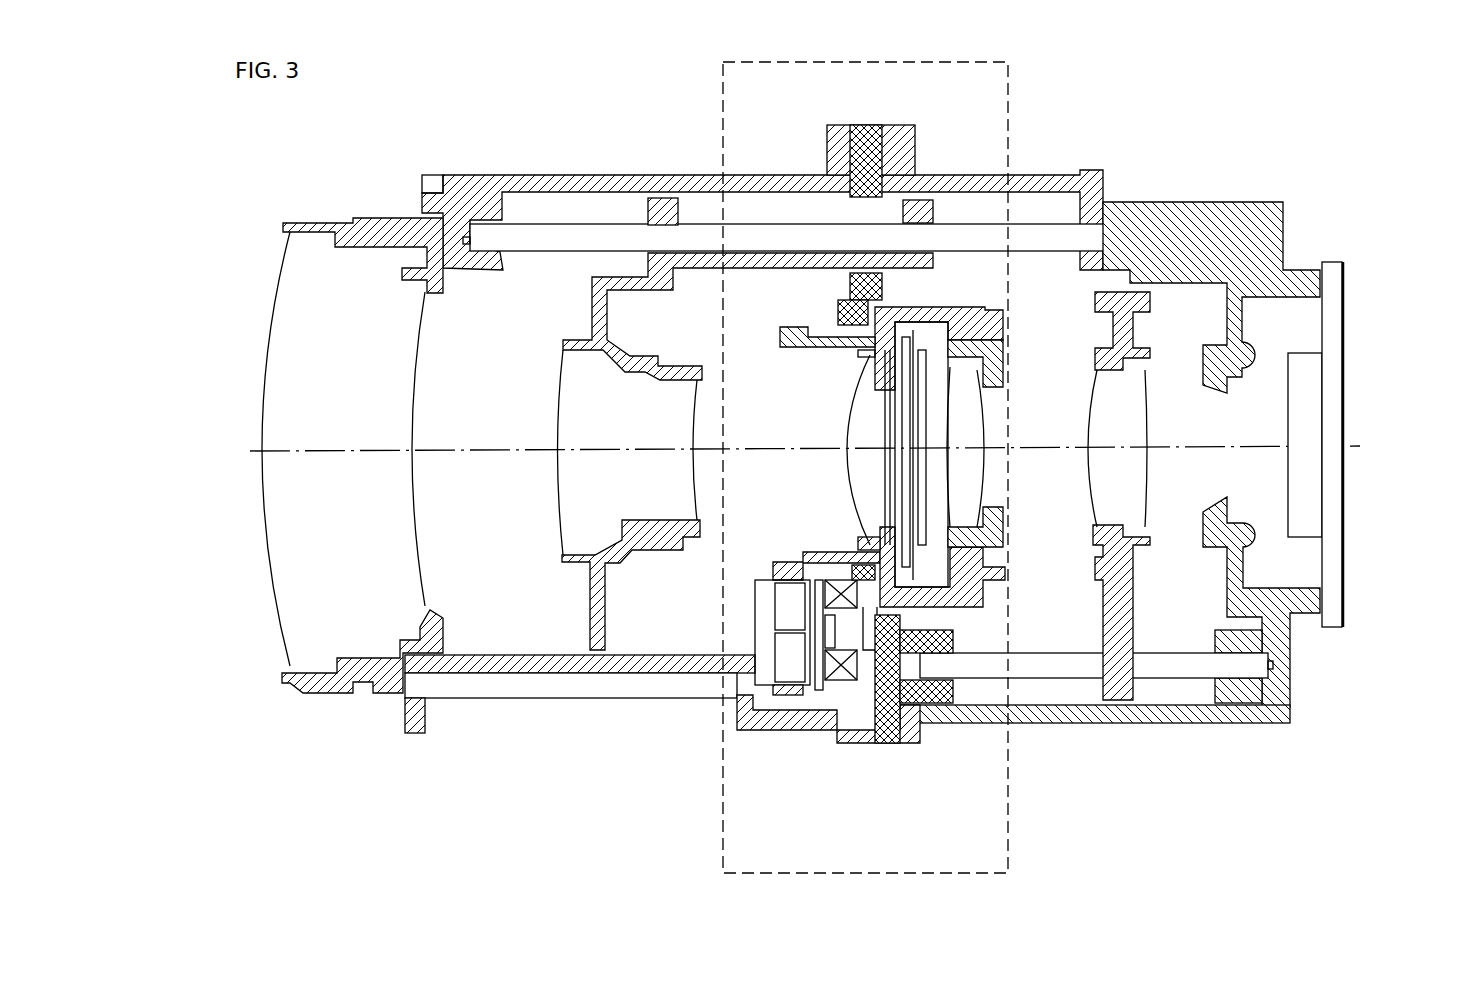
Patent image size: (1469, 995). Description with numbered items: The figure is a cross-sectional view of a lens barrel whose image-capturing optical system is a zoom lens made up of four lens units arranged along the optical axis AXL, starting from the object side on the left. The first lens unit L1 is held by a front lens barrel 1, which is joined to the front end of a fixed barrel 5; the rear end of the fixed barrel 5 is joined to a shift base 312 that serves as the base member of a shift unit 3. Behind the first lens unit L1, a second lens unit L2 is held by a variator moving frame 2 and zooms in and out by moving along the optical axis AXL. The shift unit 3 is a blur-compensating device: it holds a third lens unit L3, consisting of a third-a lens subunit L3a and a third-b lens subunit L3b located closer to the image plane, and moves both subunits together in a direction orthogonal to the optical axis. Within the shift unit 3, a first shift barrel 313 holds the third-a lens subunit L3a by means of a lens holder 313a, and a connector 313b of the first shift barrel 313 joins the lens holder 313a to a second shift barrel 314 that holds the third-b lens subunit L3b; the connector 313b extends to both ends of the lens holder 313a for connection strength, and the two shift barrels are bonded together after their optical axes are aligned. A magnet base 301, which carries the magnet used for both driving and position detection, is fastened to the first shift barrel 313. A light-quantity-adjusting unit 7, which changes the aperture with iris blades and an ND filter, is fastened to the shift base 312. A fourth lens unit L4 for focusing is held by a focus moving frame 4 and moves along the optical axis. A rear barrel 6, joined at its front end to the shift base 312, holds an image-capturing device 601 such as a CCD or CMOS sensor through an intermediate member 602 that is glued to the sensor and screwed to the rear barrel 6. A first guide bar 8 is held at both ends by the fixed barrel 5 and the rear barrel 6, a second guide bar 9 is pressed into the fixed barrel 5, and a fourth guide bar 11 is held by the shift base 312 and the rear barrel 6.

The front lens barrel 1 is at (383, 227).
The variator moving frame 2 is at (598, 650).
The shift unit 3 is at (902, 467).
The focus moving frame 4 is at (1140, 303).
The fixed barrel 5 is at (567, 182).
The rear barrel 6 is at (1307, 612).
The light-quantity-adjusting unit 7 is at (937, 370).
The first guide bar 8 is at (622, 225).
The second guide bar 9 is at (641, 690).
The fourth guide bar 11 is at (1178, 663).
The magnet base 301 is at (795, 550).
The shift base 312 is at (866, 125).
The first shift barrel 313 is at (923, 520).
The lens holder 313a is at (860, 353).
The connector 313b is at (918, 318).
The second shift barrel 314 is at (995, 372).
The image-capturing device 601 is at (1308, 393).
The intermediate member 602 is at (1340, 430).
The first lens unit L1 is at (332, 270).
The second lens unit L2 is at (560, 497).
The third lens unit L3 is at (898, 592).
The third-a lens subunit L3a is at (850, 547).
The third-b lens subunit L3b is at (968, 510).
The fourth lens unit L4 is at (1148, 437).
The optical axis AXL is at (255, 449).